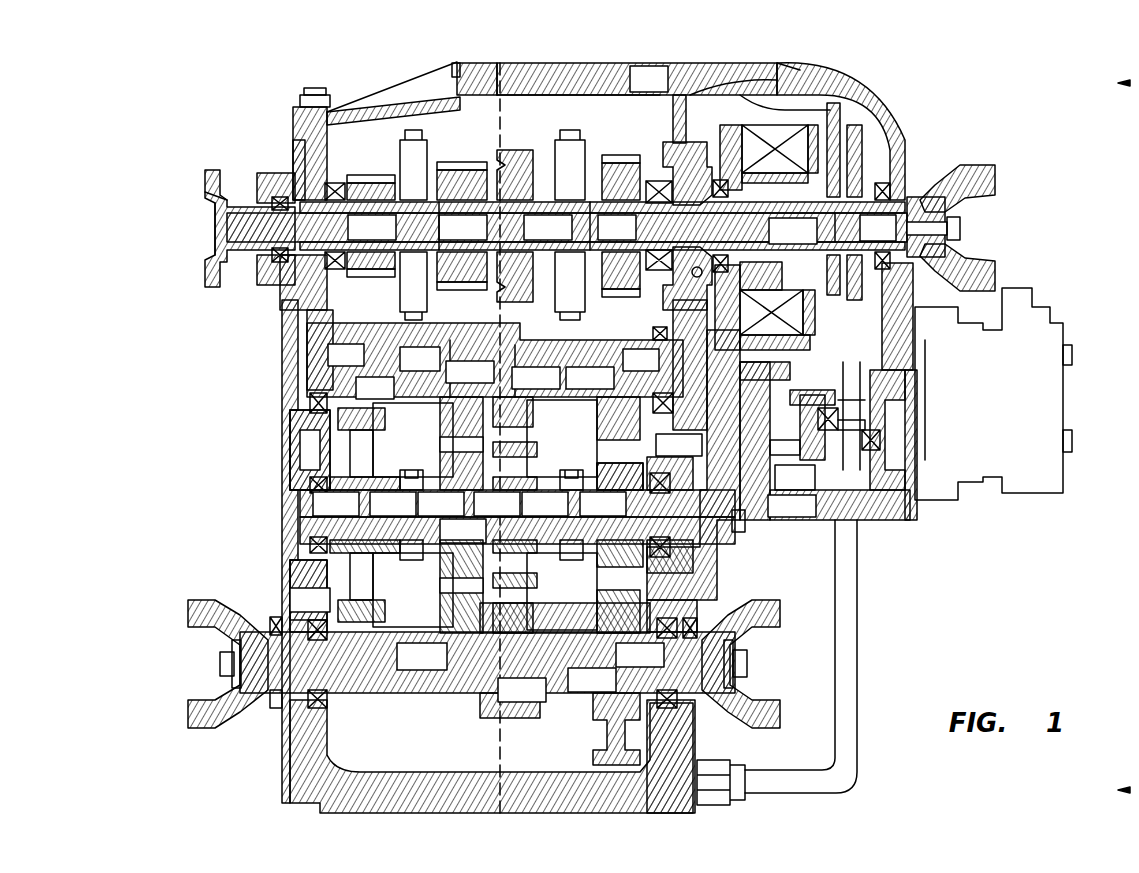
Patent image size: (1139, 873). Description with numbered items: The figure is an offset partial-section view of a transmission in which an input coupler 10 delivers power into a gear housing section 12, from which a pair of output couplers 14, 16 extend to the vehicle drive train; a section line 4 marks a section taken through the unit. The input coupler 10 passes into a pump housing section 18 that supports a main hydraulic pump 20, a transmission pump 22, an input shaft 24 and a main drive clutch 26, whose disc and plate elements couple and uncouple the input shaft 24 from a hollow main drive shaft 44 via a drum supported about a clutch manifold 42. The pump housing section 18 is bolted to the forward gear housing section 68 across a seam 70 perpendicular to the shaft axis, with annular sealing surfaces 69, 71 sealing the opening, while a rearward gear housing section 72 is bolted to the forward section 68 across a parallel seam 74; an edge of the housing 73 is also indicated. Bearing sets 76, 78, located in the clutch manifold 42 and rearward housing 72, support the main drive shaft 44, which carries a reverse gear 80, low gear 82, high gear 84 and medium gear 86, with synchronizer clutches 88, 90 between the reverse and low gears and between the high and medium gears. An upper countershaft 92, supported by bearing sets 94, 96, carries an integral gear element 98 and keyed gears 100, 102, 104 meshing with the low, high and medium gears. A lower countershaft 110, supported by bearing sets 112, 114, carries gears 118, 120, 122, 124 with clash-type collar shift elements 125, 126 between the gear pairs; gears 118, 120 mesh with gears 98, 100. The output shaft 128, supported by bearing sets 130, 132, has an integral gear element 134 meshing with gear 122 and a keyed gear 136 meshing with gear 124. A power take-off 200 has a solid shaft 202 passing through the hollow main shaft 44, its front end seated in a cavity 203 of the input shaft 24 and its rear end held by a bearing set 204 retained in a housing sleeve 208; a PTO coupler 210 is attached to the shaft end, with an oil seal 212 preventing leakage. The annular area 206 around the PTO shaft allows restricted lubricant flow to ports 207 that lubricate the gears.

The section line 4- 4 is at (503, 75).
The input coupler 10 is at (972, 165).
The gear housing section 12 is at (262, 382).
The front output coupler 14 is at (775, 617).
The rear output coupler 16 is at (200, 617).
The pump housing section 18 is at (850, 112).
The main hydraulic pump 20 is at (1057, 305).
The transmission pump 22 is at (825, 485).
The input shaft 24 is at (863, 240).
The main drive clutch 26 is at (770, 127).
The clutch manifold 42 is at (693, 142).
The main drive shaft 44 is at (582, 222).
The forward gear transmission housing section 68 is at (664, 91).
The annular sealing surface 69 is at (735, 83).
The seam 70 is at (678, 130).
The annular sealing surface 71 is at (785, 91).
The rearward gear housing section 72 is at (447, 83).
The cover edge 73 is at (780, 88).
The seam 74 is at (508, 88).
The bearing set 76 is at (653, 180).
The bearing set 78 is at (337, 182).
The reverse gear 80 is at (375, 175).
The low gear 82 is at (452, 170).
The high gear 84 is at (520, 150).
The medium gear 86 is at (623, 163).
The synchronizer clutch 88 is at (420, 140).
The synchronizer clutch 90 is at (572, 140).
The upper countershaft 92 is at (436, 372).
The bearing set 94 is at (662, 345).
The bearing set 96 is at (322, 350).
The integral gear element 98 is at (358, 410).
The gear 100 is at (452, 394).
The gear 102 is at (514, 397).
The gear 104 is at (612, 397).
The lower countershaft 110 is at (522, 518).
The bearing set 112 is at (658, 470).
The bearing set 114 is at (300, 464).
The gear 118 is at (356, 490).
The gear 120 is at (460, 490).
The gear 122 is at (518, 490).
The gear 124 is at (625, 490).
The collar shift element 125 is at (415, 490).
The collar shift element 126 is at (563, 490).
The output shaft 128 is at (445, 669).
The bearing set 130 is at (670, 642).
The bearing set 132 is at (314, 630).
The integral gear element 134 is at (513, 696).
The gear 136 is at (625, 693).
The PTO 200 is at (205, 292).
The solid shaft 202 is at (352, 238).
The cavity 203 is at (832, 230).
The bearing set 204 is at (272, 277).
The annular area 206 is at (463, 226).
The ports 207 is at (556, 226).
The housing sleeve 208 is at (295, 152).
The PTO coupler 210 is at (206, 188).
The oil seal 212 is at (250, 192).